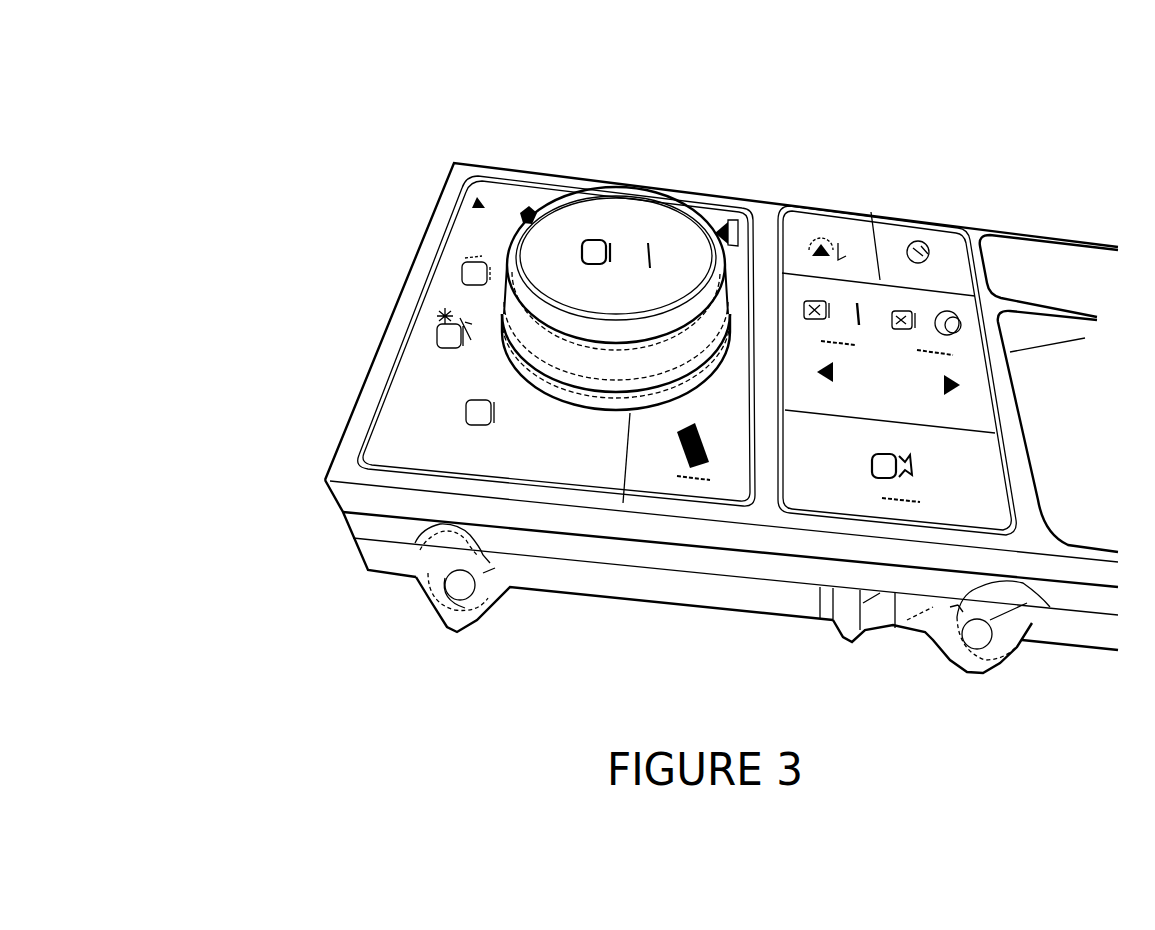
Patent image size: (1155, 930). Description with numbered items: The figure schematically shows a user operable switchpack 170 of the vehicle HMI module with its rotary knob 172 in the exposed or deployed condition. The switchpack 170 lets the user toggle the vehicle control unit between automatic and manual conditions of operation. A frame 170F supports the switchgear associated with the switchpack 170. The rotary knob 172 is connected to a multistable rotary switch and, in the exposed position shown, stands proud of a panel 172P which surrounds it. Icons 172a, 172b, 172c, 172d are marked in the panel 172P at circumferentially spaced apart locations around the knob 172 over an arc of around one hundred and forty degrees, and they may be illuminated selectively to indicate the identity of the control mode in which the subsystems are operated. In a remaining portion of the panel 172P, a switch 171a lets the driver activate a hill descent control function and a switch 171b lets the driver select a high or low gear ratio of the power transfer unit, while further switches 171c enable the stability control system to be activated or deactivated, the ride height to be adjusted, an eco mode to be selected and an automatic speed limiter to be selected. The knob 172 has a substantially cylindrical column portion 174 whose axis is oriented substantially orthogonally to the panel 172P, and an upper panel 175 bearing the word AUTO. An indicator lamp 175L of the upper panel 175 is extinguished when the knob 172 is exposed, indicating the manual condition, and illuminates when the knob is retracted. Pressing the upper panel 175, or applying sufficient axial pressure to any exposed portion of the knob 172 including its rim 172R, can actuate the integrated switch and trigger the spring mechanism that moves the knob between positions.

The switchpack 170 is at (985, 92).
The frame 170F is at (382, 548).
The switch 171a is at (676, 452).
The switch 171b is at (731, 220).
The further switches 171c is at (960, 355).
The rotary knob 172 is at (476, 203).
The icon 172a is at (468, 416).
The icon 172b is at (440, 333).
The icon 172c is at (462, 270).
The icon 172d is at (528, 207).
The panel 172P is at (407, 407).
The rim 172R is at (600, 345).
The column portion 174 is at (508, 348).
The upper panel 175 is at (604, 217).
The indicator lamp 175L is at (648, 243).